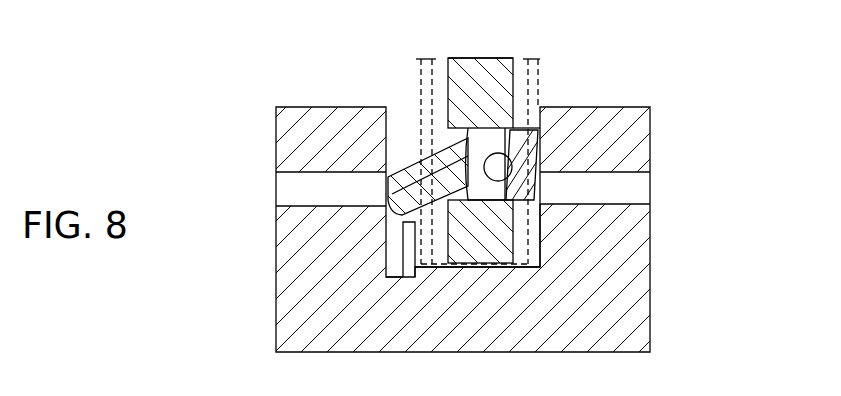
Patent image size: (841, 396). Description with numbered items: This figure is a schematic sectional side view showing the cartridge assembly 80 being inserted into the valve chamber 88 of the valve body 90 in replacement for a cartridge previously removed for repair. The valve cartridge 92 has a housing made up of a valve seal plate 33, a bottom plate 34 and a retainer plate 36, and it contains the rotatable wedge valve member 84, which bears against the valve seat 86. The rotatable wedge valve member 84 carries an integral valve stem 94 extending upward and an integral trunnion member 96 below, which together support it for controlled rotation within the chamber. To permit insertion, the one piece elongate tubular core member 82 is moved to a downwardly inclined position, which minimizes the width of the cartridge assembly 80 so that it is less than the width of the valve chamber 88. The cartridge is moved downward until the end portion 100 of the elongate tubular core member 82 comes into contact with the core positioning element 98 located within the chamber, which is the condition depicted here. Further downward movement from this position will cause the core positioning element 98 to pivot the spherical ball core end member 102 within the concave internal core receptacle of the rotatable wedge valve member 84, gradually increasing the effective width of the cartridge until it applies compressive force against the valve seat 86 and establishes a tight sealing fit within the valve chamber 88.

The cartridge assembly 80 is at (634, 32).
The elongate tubular core member 82 is at (380, 176).
The rotatable wedge valve member 84 is at (490, 194).
The valve seat 86 is at (527, 172).
The valve chamber 88 is at (513, 270).
The valve body 90 is at (618, 328).
The valve cartridge 92 is at (482, 50).
The valve stem 94 is at (488, 89).
The trunnion member 96 is at (490, 226).
The core positioning element 98 is at (410, 250).
The end portion 100 is at (412, 166).
The ball core end member 102 is at (518, 150).
The valve seal plate 33 is at (529, 46).
The bottom plate 34 is at (540, 277).
The retainer plate 36 is at (438, 62).